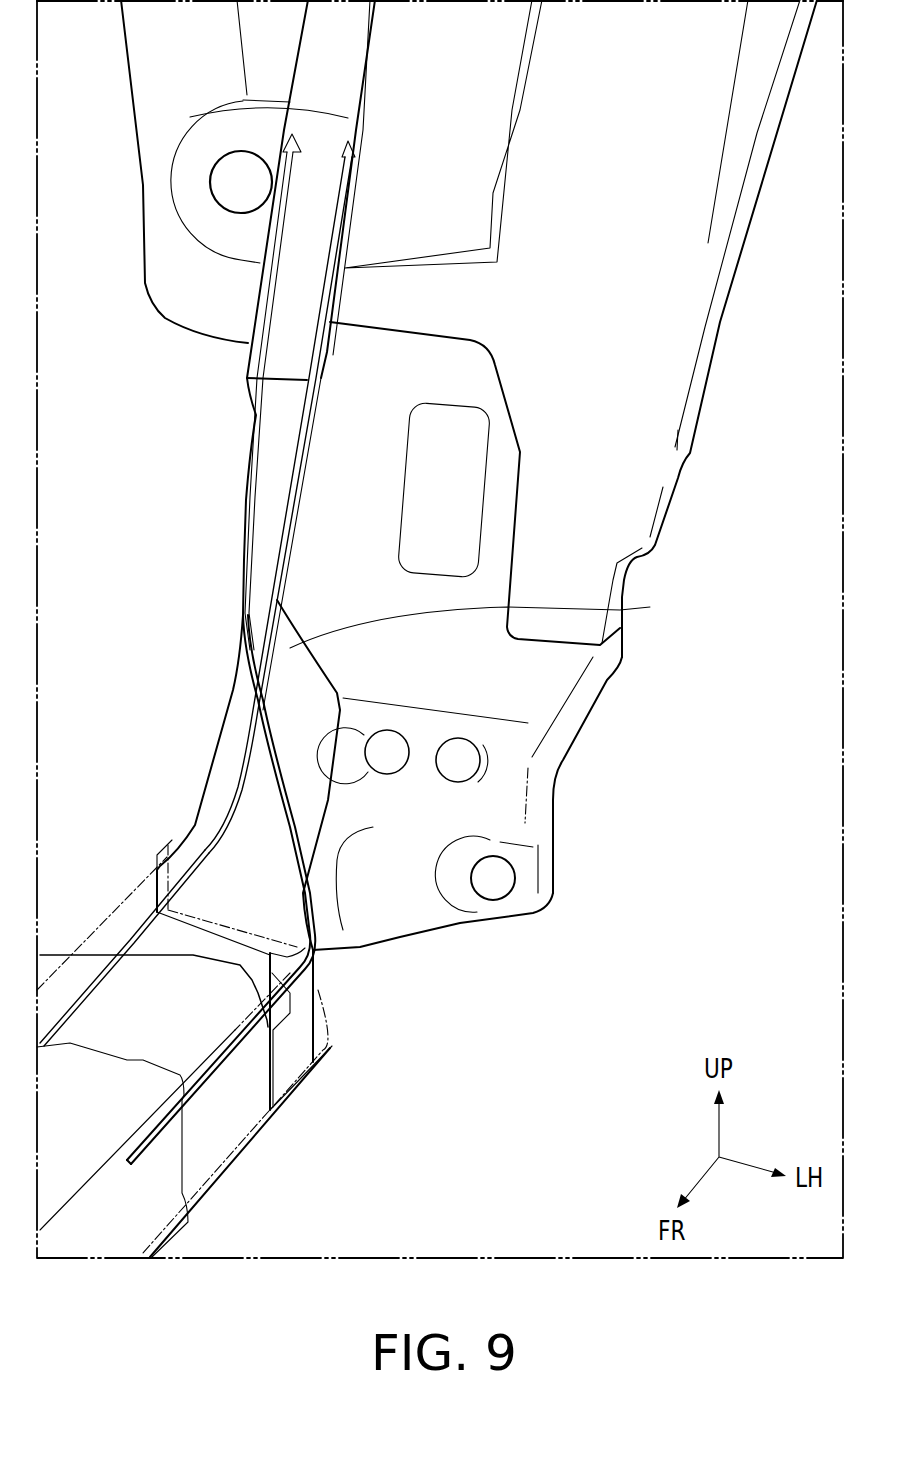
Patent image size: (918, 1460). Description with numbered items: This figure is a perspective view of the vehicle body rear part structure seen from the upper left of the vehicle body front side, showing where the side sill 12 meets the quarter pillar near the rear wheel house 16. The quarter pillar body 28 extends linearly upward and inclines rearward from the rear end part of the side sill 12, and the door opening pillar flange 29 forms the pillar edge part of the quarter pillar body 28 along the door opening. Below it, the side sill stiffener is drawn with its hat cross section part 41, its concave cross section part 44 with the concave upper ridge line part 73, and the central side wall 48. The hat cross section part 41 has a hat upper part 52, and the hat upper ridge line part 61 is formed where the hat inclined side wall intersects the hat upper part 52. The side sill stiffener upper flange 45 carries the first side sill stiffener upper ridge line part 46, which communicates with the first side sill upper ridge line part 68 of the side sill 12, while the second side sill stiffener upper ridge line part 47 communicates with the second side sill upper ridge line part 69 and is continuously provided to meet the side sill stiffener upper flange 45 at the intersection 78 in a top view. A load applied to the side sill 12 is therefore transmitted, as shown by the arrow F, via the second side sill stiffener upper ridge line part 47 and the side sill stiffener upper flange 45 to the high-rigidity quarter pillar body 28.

The side sill 12 is at (192, 1239).
The rear wheel house 16 is at (758, 218).
The quarter pillar body 28 is at (290, 75).
The door opening pillar flange 29 is at (190, 117).
The hat cross section part 41 is at (447, 950).
The concave cross section part 44 is at (486, 485).
The side sill stiffener upper flange 45 is at (220, 763).
The first side sill stiffener upper ridge line part 46 is at (575, 805).
The second side sill stiffener upper ridge line part 47 is at (373, 827).
The central side wall 48 is at (302, 825).
The hat upper part 52 is at (235, 890).
The hat upper ridge line part 61 is at (590, 737).
The first side sill upper ridge line part 68 is at (130, 940).
The second side sill upper ridge line part 69 is at (380, 988).
The concave upper ridge line part 73 is at (245, 497).
The intersection 78 is at (243, 635).
The arrow F is at (210, 850).